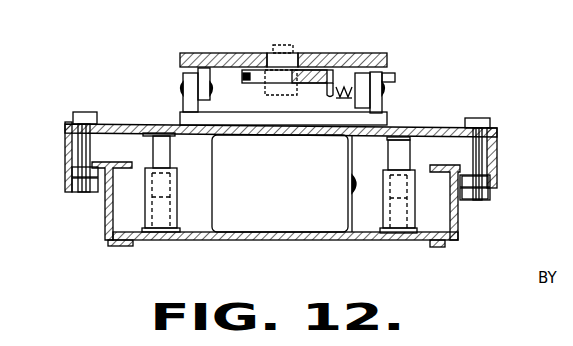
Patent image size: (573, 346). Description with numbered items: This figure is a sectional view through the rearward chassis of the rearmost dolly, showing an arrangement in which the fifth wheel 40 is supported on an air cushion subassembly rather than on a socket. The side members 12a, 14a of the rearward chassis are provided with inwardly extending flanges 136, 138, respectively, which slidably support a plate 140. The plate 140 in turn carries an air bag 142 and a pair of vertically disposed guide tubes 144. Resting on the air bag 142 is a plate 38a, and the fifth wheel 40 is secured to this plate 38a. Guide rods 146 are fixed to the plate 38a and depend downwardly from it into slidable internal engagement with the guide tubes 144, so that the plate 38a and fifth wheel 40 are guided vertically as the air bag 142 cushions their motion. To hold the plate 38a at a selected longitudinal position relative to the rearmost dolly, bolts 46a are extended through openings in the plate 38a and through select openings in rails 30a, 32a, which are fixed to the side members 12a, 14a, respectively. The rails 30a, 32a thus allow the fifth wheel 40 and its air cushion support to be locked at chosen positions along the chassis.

The fifth wheel 40 is at (372, 43).
The bolts 46a is at (80, 110).
The guide rods 146 is at (155, 143).
The plate 38a is at (442, 130).
The rail 32a is at (103, 198).
The side member 14a is at (105, 218).
The flange 138 is at (118, 247).
The guide tubes 144 is at (163, 222).
The air bag 142 is at (260, 227).
The plate 140 is at (353, 240).
The flange 136 is at (442, 247).
The rail 30a is at (468, 198).
The side member 12a is at (460, 223).